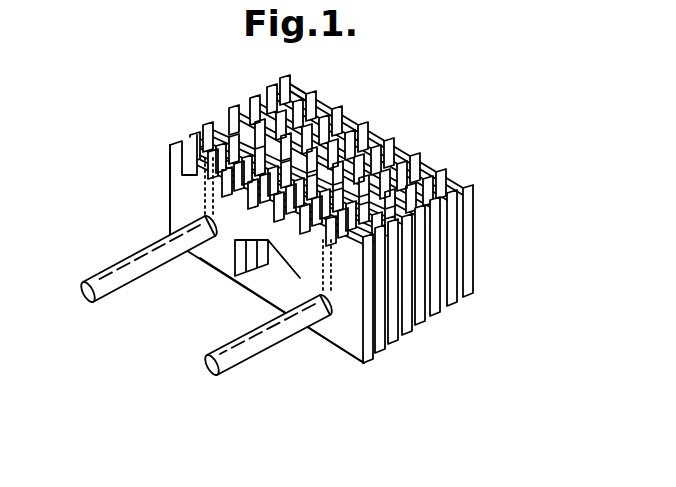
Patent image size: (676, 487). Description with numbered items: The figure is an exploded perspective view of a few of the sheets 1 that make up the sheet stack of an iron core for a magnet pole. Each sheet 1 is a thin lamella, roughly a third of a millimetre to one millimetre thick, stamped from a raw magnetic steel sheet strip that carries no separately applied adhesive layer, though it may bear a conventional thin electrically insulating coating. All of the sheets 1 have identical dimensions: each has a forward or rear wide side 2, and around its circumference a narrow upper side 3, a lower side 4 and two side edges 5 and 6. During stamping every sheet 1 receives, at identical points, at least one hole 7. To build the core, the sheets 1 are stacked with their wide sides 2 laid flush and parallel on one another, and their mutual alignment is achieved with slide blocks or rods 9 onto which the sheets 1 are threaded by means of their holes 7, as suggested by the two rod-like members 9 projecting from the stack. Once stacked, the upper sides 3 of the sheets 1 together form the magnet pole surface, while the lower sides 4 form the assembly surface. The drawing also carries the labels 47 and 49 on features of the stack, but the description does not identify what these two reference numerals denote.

The sheets 1 is at (168, 150).
The wide side 2 is at (212, 265).
The upper side 3 is at (380, 132).
The lower side 4 is at (345, 353).
The side edge 5 is at (170, 181).
The side edge 6 is at (474, 238).
The hole 7 is at (309, 330).
The slide blocks or rods 9 is at (95, 302).
The grooves 47 is at (260, 288).
The fin tab 49 is at (352, 124).